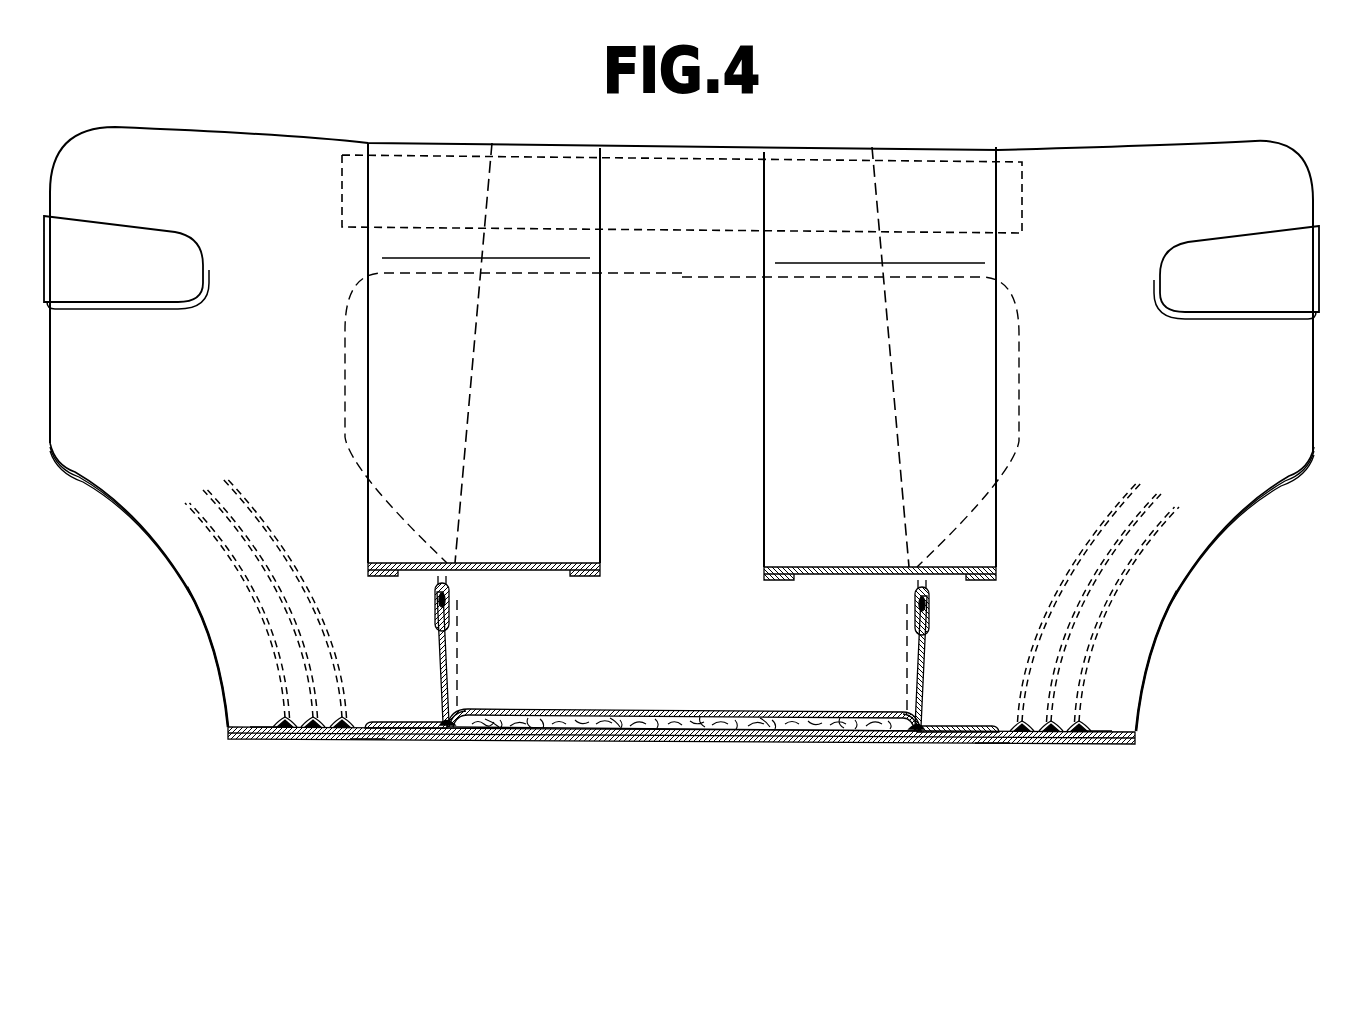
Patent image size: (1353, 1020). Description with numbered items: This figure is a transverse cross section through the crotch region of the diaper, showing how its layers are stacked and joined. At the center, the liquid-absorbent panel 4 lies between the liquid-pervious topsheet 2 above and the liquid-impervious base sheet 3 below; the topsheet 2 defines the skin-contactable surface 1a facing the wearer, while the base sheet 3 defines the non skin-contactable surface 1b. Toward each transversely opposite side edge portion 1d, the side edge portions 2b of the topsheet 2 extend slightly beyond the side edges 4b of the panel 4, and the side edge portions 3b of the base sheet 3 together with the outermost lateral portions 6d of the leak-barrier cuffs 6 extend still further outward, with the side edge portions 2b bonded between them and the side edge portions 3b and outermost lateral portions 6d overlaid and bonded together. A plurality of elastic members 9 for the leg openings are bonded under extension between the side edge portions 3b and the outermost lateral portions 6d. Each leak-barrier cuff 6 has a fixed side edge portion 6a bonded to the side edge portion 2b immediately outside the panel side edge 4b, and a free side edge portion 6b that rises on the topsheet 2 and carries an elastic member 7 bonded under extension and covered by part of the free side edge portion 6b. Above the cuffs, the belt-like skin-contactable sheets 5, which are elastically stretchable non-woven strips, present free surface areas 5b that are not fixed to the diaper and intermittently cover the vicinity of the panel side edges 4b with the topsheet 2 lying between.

The skin-contactable surface 1a is at (627, 708).
The non skin-contactable surface 1b is at (663, 745).
The transversely opposite side edge portions 1d is at (232, 740).
The liquid-pervious topsheet 2 is at (705, 710).
The side edge portions of the topsheet 2b is at (420, 735).
The liquid-impervious base sheet 3 is at (810, 745).
The side edge portions of the base sheet 3b is at (367, 740).
The liquid-absorbent panel 4 is at (727, 735).
The transversely opposite side edges of the panel 4b is at (456, 742).
The skin-contactable sheets 5 is at (548, 563).
The free surface areas 5b is at (480, 563).
The leak-barrier cuffs 6 is at (440, 666).
The fixed side edge portions 6a is at (445, 720).
The free side edge portions 6b is at (437, 620).
The outermost lateral portions 6d is at (265, 727).
The elastic members 7 is at (447, 600).
The elastic members 9 is at (340, 738).